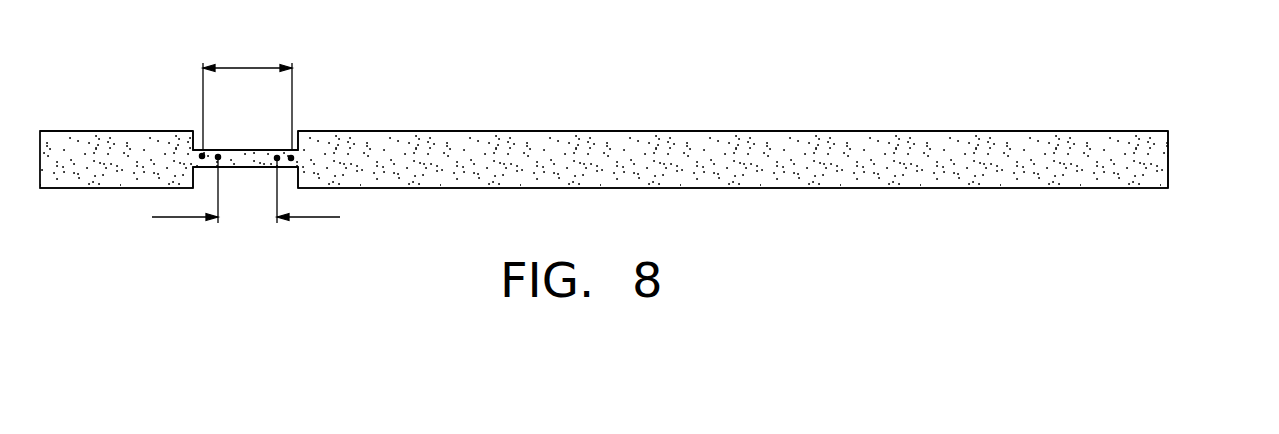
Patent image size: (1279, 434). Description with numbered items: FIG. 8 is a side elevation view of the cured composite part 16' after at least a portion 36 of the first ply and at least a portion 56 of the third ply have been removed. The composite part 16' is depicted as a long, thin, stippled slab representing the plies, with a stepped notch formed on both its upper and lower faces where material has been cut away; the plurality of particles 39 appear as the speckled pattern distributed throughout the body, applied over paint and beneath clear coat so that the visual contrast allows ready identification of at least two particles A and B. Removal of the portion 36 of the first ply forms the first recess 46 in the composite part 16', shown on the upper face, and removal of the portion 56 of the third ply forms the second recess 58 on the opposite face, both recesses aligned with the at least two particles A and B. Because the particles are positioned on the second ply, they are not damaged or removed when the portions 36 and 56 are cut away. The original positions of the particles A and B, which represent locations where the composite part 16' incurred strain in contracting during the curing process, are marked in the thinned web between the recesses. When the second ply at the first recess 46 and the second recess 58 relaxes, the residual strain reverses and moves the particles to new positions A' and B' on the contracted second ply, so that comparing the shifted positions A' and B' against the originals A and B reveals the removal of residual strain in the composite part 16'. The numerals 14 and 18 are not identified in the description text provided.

The substrate 14 is at (803, 178).
The composite part 16' is at (1214, 140).
The first surface of substrate 18 is at (752, 131).
The portion of first ply 36 is at (292, 121).
The particles 39 is at (97, 158).
The first recess 46 is at (235, 123).
The portion of third ply 56 is at (263, 196).
The second recess 58 is at (235, 196).
The particle A is at (165, 120).
The new position of particle A A' is at (226, 118).
The particle B is at (334, 131).
The new position of particle B B' is at (266, 135).